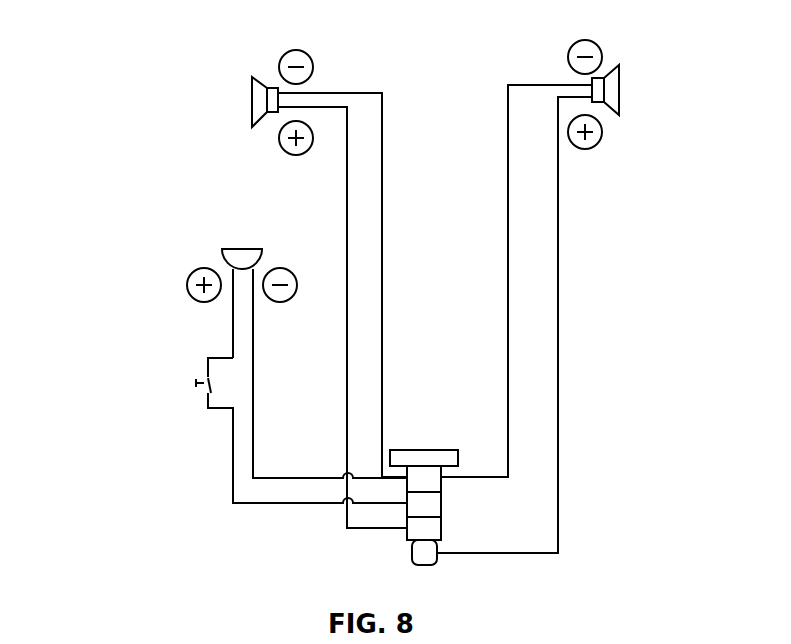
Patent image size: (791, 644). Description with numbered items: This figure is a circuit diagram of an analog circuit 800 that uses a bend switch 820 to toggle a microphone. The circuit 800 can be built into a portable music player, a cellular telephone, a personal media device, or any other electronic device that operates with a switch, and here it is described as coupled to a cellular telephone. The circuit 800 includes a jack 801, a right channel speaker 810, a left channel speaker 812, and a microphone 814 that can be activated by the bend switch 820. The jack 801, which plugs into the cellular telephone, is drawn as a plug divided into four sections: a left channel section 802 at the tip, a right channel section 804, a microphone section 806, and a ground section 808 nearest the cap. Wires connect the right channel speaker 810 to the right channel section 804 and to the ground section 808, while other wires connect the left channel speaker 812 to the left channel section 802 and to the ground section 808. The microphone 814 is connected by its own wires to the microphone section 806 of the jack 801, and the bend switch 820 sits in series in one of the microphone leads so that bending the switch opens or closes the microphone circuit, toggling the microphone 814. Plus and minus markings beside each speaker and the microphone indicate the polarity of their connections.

The analog circuit 800 is at (134, 50).
The jack 801 is at (441, 495).
The left channel section 802 is at (425, 566).
The right channel section 804 is at (441, 522).
The microphone section 806 is at (441, 508).
The ground section 808 is at (433, 473).
The right channel speaker 810 is at (252, 100).
The left channel speaker 812 is at (619, 90).
The microphone 814 is at (222, 249).
The bend switch 820 is at (207, 367).